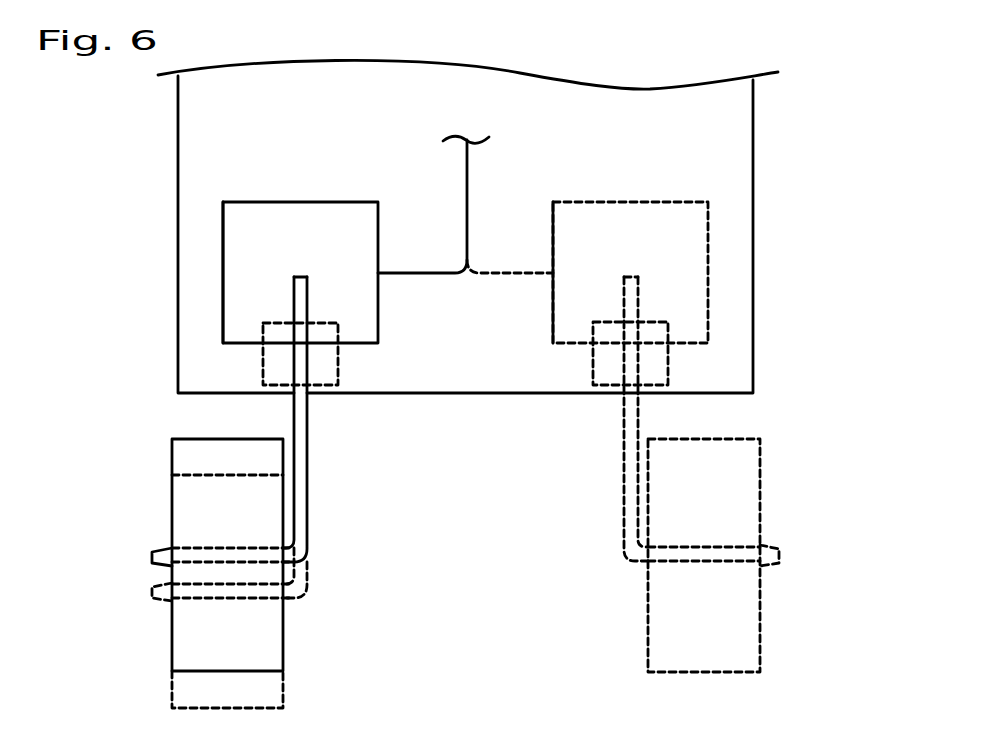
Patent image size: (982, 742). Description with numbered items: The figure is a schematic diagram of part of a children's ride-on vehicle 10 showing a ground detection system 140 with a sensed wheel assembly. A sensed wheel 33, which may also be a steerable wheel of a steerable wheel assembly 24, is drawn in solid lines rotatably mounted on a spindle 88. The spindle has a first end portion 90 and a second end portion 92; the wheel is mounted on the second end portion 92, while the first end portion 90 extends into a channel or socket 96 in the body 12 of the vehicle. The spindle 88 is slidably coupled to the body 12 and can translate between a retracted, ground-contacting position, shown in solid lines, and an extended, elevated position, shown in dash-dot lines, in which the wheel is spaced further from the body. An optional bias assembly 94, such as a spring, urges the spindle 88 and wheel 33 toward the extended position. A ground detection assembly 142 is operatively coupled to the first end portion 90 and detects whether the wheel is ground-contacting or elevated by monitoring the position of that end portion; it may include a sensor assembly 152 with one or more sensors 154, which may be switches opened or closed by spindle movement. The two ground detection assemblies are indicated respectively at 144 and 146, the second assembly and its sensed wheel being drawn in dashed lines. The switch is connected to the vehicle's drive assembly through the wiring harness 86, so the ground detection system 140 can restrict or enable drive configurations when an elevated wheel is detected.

The ride-on vehicle 10 is at (815, 96).
The body 12 is at (758, 147).
The steerable wheel assembly 24 is at (146, 525).
The sensed wheel 33 is at (284, 690).
The wiring harness 86 is at (470, 195).
The spindle 88 is at (322, 476).
The first end portion 90 is at (293, 300).
The second end portion 92 is at (215, 548).
The bias assembly 94 is at (340, 358).
The channel 96 is at (301, 390).
The ground detection system 140 is at (733, 295).
The ground detection assembly 142 is at (218, 268).
The first ground detection assembly 144 is at (223, 209).
The second ground detection assembly 146 is at (638, 203).
The sensor assembly 152 is at (355, 279).
The sensor 154 is at (333, 223).